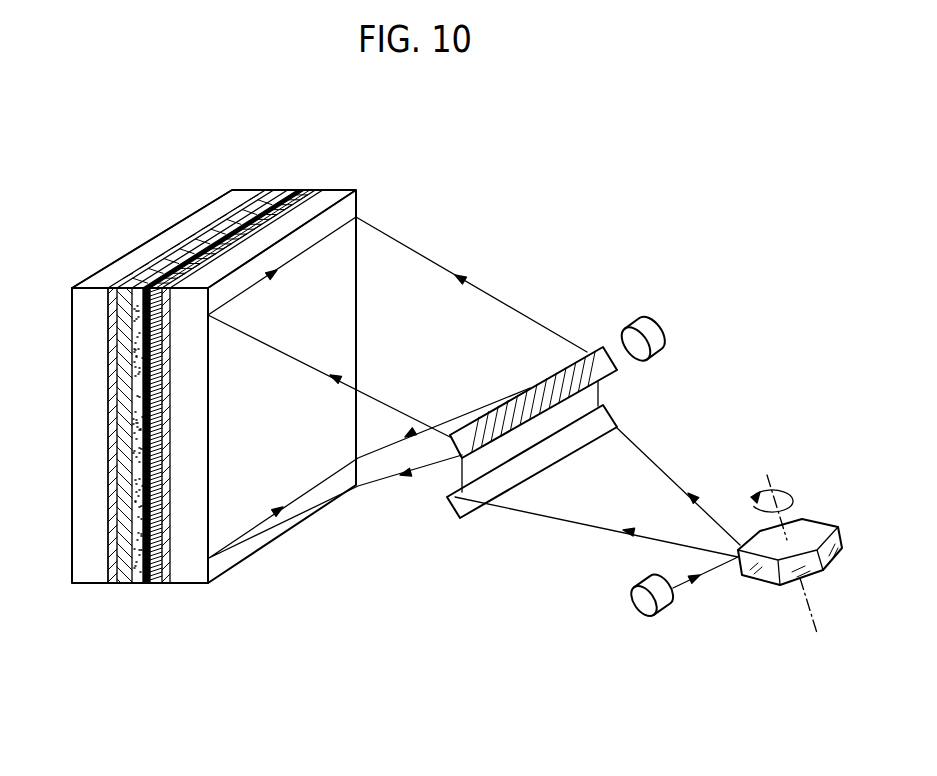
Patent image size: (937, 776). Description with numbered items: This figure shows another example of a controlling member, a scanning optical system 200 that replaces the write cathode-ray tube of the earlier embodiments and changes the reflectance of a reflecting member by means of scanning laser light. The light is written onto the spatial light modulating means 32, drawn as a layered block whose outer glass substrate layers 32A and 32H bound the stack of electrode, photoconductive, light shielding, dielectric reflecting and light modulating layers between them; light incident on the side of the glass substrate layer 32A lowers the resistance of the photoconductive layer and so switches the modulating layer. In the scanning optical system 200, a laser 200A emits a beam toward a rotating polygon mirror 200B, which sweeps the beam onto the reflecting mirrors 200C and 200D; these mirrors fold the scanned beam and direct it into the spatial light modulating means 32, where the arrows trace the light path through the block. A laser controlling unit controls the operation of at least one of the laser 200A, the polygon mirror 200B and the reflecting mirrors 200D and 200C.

The spatial light modulating means 32 is at (213, 403).
The glass substrate layer 32H is at (90, 308).
The glass substrate layer 32A is at (338, 192).
The scanning optical system 200 is at (667, 521).
The laser 200A is at (671, 622).
The polygon mirror 200B is at (837, 548).
The reflecting mirror 200C is at (607, 408).
The reflecting mirror 200D is at (590, 345).